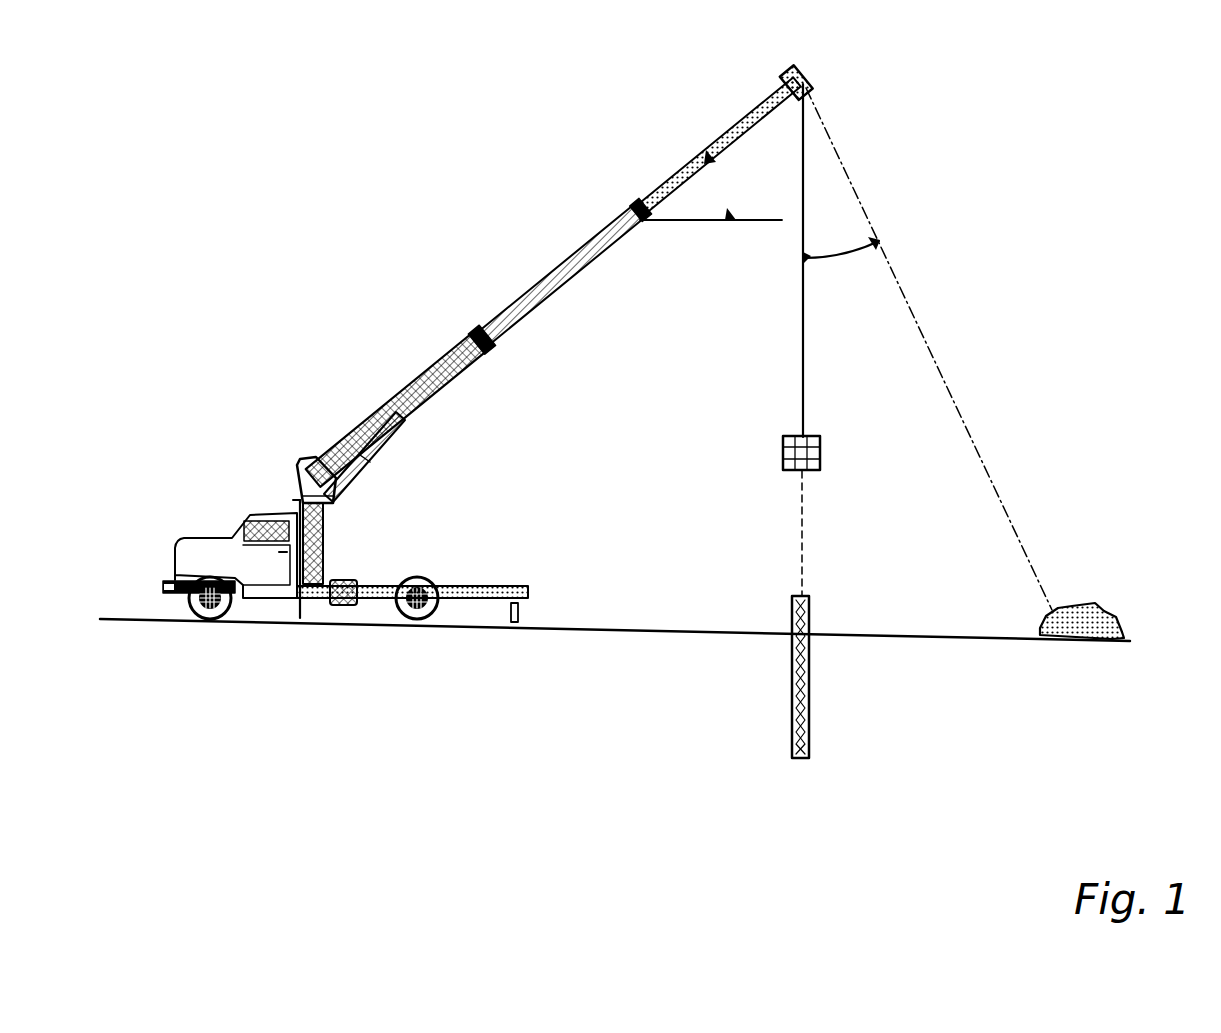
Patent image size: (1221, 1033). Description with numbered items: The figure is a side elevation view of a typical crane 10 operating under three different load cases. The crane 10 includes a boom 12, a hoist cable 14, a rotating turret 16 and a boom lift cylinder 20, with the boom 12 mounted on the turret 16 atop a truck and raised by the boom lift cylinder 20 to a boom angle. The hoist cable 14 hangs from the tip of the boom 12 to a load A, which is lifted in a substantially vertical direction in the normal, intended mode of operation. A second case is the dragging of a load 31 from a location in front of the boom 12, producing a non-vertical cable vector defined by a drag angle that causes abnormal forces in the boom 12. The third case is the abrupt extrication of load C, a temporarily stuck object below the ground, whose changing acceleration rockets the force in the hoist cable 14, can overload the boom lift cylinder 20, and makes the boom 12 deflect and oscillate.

The crane 10 is at (1022, 136).
The boom 12 is at (500, 311).
The hoist cable 14 is at (802, 353).
The rotating turret 16 is at (299, 484).
The boom lift cylinder 20 is at (362, 461).
The obstacle 31 is at (1097, 604).
The load A is at (821, 449).
The load C is at (810, 608).